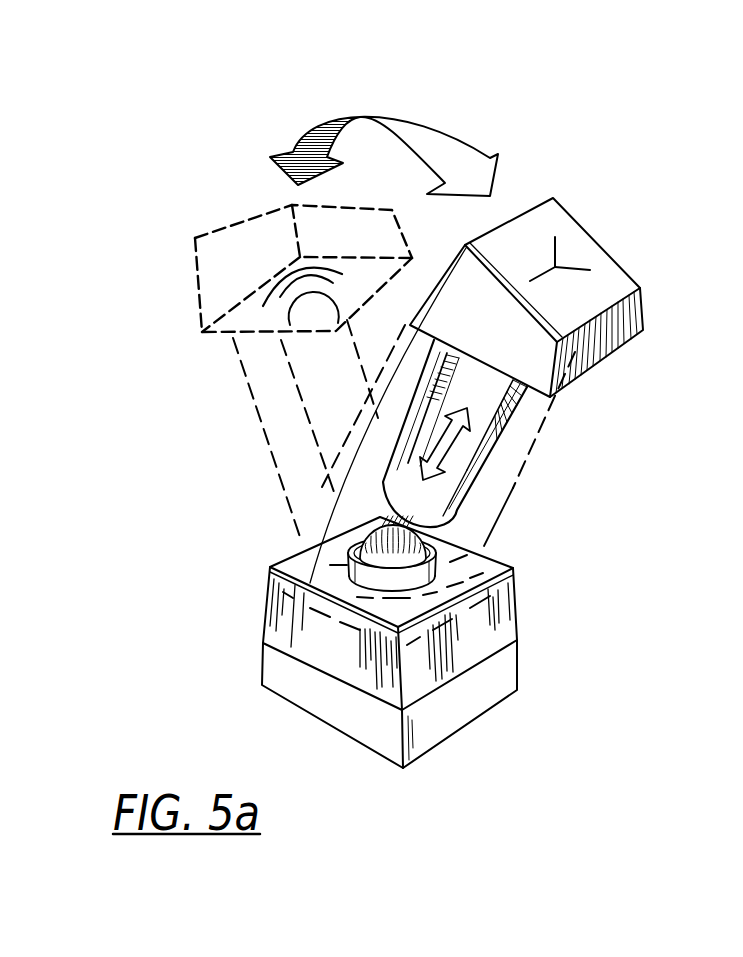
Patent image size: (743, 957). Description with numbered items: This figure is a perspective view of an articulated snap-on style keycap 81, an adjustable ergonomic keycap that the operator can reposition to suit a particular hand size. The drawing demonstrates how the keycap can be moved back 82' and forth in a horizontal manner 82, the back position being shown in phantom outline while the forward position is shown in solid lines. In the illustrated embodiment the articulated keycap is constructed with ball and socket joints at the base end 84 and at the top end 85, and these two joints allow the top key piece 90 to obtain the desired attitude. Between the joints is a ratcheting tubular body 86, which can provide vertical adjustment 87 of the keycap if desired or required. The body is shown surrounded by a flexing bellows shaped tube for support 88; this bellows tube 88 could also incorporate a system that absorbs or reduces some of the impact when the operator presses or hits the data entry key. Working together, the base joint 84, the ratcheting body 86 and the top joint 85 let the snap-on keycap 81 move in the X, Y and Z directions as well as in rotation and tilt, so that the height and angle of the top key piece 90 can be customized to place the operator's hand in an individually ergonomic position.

The articulated snap on style keycap 81 is at (624, 198).
The horizontal manner of movement 82 is at (384, 120).
The back position of keycap 82' is at (257, 368).
The base end ball and socket joint 84 is at (370, 535).
The top end ball and socket joint 85 is at (284, 300).
The ratcheting tubular body 86 is at (527, 422).
The vertical adjustment 87 is at (420, 432).
The flexing bellows shaped tube 88 is at (488, 537).
The top key piece 90 is at (538, 224).